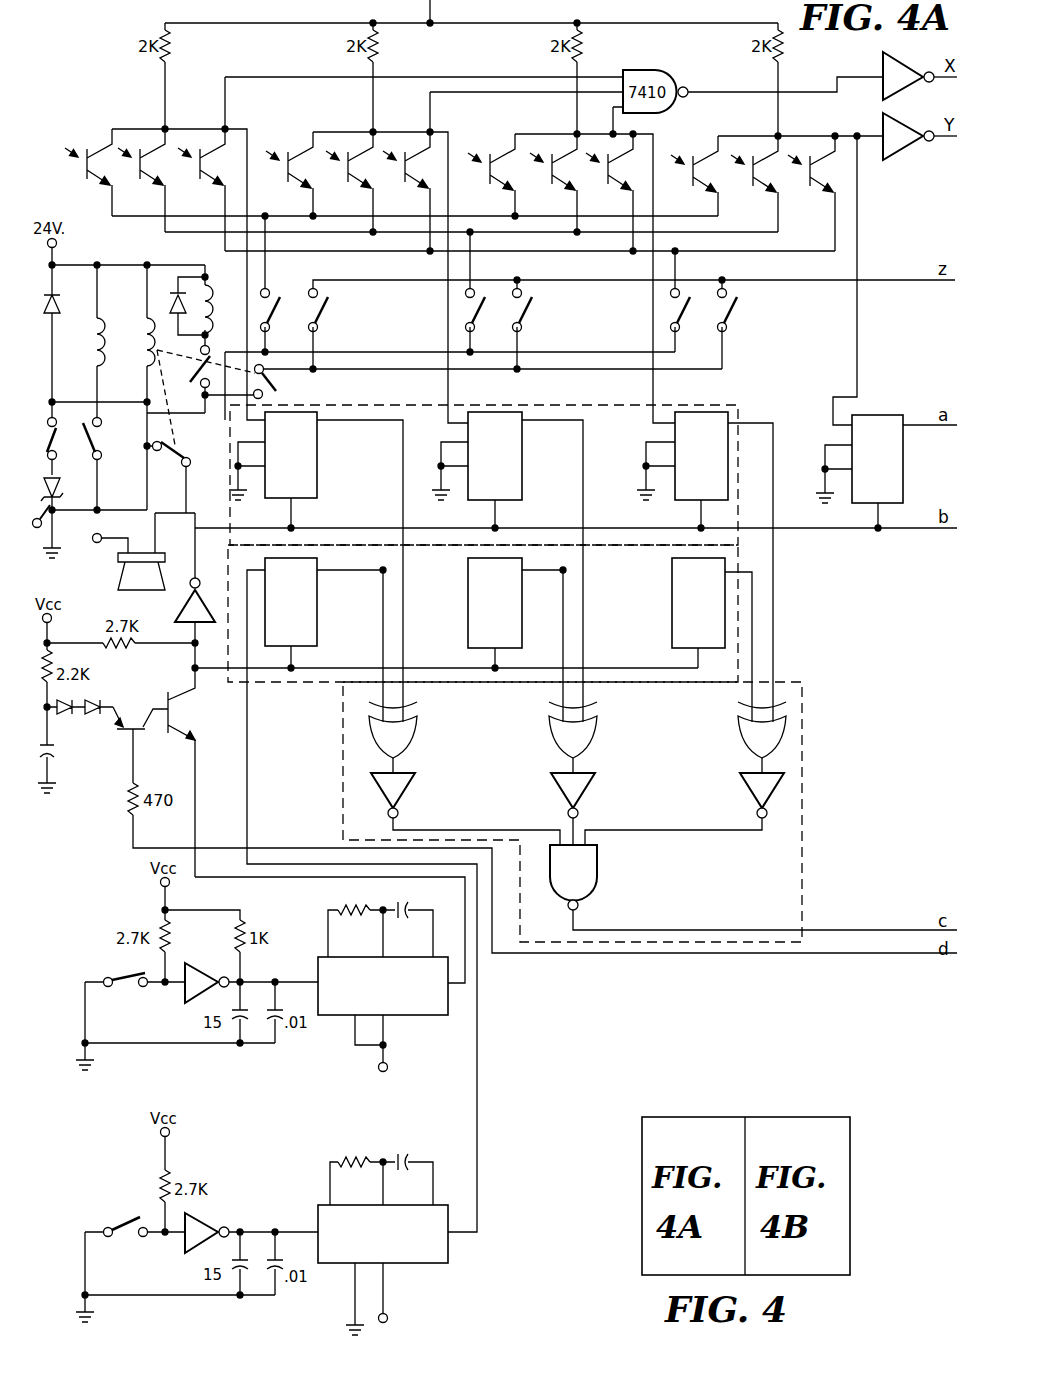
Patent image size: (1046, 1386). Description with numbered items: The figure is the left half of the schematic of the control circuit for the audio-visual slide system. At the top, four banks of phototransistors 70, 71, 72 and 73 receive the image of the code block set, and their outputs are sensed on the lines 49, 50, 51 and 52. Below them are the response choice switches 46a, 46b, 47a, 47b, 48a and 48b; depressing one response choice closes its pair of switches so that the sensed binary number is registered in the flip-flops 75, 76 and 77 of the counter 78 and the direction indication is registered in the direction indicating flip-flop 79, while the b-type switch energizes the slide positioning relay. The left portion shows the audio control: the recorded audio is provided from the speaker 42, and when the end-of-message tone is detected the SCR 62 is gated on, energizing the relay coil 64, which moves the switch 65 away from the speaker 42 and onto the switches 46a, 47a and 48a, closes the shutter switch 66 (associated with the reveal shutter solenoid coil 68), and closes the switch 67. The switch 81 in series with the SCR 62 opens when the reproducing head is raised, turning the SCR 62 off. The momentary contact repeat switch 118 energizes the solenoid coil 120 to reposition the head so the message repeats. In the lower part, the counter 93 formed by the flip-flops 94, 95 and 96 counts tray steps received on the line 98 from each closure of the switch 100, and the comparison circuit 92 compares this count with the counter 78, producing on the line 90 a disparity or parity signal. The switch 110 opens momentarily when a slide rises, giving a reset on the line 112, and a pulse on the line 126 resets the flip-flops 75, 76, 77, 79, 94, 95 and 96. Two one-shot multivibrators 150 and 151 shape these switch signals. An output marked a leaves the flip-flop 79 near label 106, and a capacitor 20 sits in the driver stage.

The line 49 is at (247, 134).
The line 50 is at (448, 136).
The line 51 is at (653, 140).
The line 52 is at (857, 197).
The phototransistor 70 is at (92, 186).
The phototransistor 71 is at (292, 188).
The phototransistor 72 is at (493, 190).
The phototransistor 73 is at (698, 192).
The response choice switch 46a is at (282, 321).
The response choice switch 46b is at (326, 312).
The response choice switch 47a is at (486, 321).
The response choice switch 47b is at (530, 312).
The response choice switch 48a is at (691, 322).
The response choice switch 48b is at (735, 313).
The reveal shutter solenoid coil 68 is at (222, 270).
The relay coil 64 is at (145, 320).
The shutter switch 66 is at (198, 360).
The switch 67 is at (276, 390).
The solenoid coil 120 is at (96, 333).
The momentary contact repeat switch 118 is at (99, 440).
The switch 81 is at (64, 438).
The SCR 62 is at (58, 484).
The switch 65 is at (171, 498).
The flip-flop 75 is at (273, 470).
The flip-flop 76 is at (477, 470).
The flip-flop 77 is at (740, 408).
The counter 78 is at (504, 462).
The direction indicating flip-flop 79 is at (859, 471).
The output line a 106 is at (922, 423).
The speaker 42 is at (117, 579).
The capacitor 20 is at (55, 755).
The flip-flop 94 is at (325, 640).
The flip-flop 95 is at (517, 640).
The flip-flop 96 is at (740, 561).
The counter 93 is at (514, 633).
The comparison circuit 92 is at (803, 727).
The line 98 is at (258, 740).
The line 112 is at (283, 878).
The switch 110 is at (112, 1021).
The one-shot multivibrator 150 is at (412, 1018).
The line 90 is at (857, 933).
The line 126 is at (693, 956).
The switch 100 is at (128, 1220).
The one-shot multivibrator 151 is at (433, 1265).